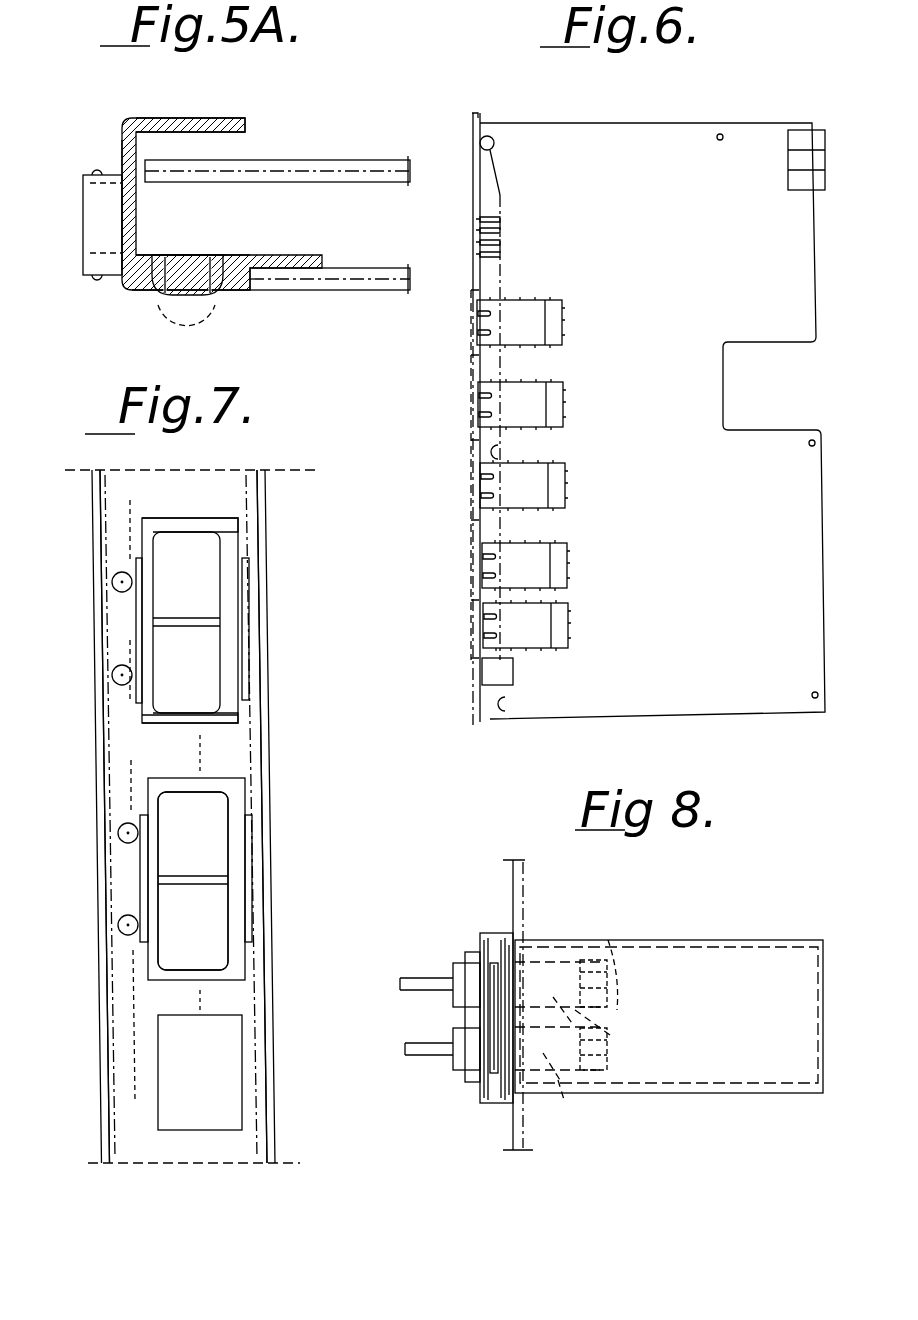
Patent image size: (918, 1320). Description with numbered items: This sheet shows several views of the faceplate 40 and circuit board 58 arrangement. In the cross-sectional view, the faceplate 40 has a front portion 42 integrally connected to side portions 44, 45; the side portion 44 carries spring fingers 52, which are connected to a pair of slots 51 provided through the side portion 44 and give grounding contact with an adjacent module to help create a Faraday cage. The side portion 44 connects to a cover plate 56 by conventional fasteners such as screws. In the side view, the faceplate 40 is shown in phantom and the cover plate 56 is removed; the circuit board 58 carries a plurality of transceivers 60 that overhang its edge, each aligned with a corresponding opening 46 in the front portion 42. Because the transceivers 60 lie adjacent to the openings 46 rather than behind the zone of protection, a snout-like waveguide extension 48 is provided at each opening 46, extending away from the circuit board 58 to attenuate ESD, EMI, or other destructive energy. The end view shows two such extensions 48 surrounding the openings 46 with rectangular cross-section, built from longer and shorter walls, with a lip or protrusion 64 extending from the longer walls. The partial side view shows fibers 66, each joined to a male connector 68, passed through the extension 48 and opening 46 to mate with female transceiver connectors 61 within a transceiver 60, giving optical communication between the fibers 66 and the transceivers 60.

In FIG. 5A, the faceplate 40 is at (136, 115).
In FIG. 6, the faceplate 40 is at (471, 137).
In FIG. 7, the faceplate 40 is at (268, 582).
In FIG. 8, the faceplate 40 is at (510, 905).
In FIG. 5A, the front portion 42 is at (122, 242).
In FIG. 7, the front portion 42 is at (217, 493).
In FIG. 5A, the side portion 44 is at (148, 296).
In FIG. 5A, the side portion 45 is at (226, 120).
In FIG. 7, the opening 46 is at (208, 808).
In FIG. 5A, the snout-like waveguide extension 48 is at (79, 220).
In FIG. 6, the snout-like waveguide extension 48 is at (443, 475).
In FIG. 8, the snout-like waveguide extension 48 is at (467, 1003).
In FIG. 5A, the slot 51 is at (210, 265).
In FIG. 5A, the spring fingers 52 is at (200, 315).
In FIG. 5A, the cover plate 56 is at (360, 285).
In FIG. 5A, the circuit board 58 is at (372, 166).
In FIG. 6, the circuit board 58 is at (750, 138).
In FIG. 8, the circuit board 58 is at (713, 913).
In FIG. 8, the transceiver 60 is at (771, 950).
In FIG. 8, the transceiver connector 61 is at (600, 962).
In FIG. 5A, the protrusion 64 is at (97, 170).
In FIG. 8, the protrusion 64 is at (493, 1050).
In FIG. 8, the fiber 66 is at (420, 1050).
In FIG. 8, the male connector 68 is at (552, 1062).